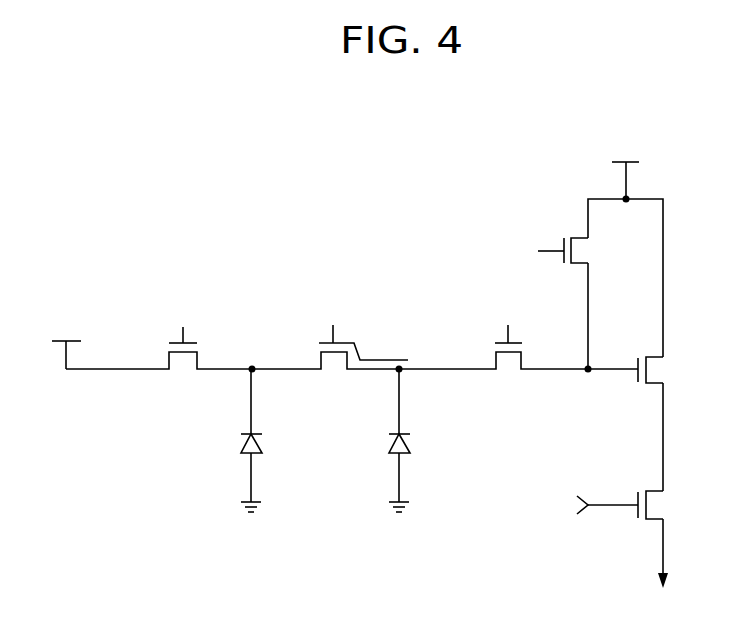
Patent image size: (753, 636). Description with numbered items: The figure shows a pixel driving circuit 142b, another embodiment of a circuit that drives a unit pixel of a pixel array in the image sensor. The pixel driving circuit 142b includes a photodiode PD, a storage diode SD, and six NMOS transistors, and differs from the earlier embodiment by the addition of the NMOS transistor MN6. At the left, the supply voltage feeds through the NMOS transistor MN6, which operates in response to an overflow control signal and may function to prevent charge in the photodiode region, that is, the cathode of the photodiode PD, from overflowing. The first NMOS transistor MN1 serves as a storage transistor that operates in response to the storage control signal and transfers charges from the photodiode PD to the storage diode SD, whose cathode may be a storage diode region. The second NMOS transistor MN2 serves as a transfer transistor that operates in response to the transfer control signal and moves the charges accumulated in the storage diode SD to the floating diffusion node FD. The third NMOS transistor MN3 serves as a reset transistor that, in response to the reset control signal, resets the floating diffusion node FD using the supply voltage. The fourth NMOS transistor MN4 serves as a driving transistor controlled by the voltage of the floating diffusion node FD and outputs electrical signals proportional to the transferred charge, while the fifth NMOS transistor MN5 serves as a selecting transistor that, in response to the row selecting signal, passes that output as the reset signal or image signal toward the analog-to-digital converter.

The pixel driving circuit 142b is at (440, 135).
The first NMOS transistor MN1 is at (362, 350).
The second NMOS transistor MN2 is at (510, 351).
The third NMOS transistor MN3 is at (565, 251).
The fourth NMOS transistor MN4 is at (669, 370).
The fifth NMOS transistor MN5 is at (615, 505).
The NMOS transistor MN6 is at (185, 351).
The photodiode PD is at (267, 440).
The storage diode SD is at (415, 440).
The floating diffusion node FD is at (588, 372).